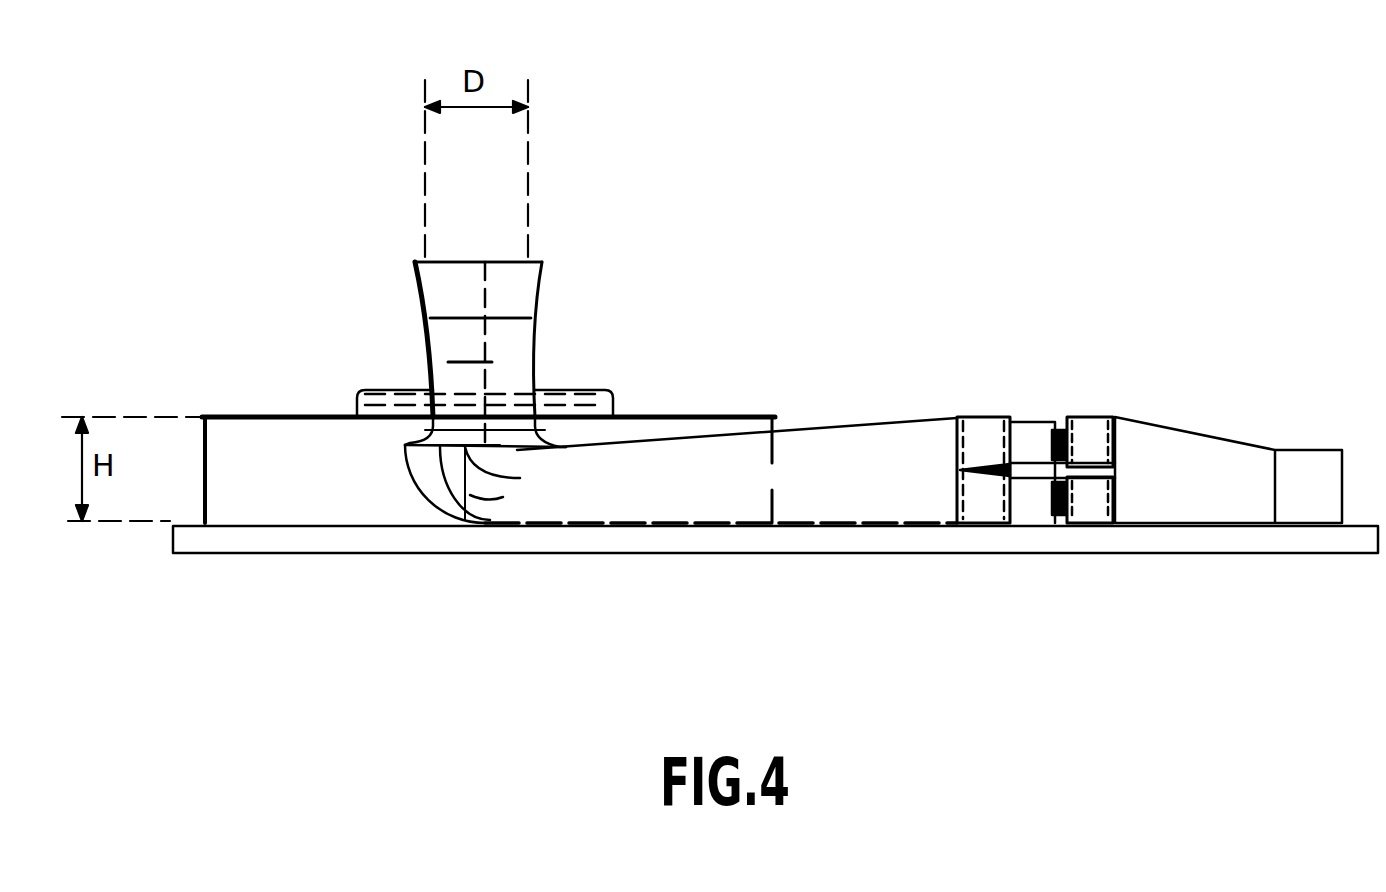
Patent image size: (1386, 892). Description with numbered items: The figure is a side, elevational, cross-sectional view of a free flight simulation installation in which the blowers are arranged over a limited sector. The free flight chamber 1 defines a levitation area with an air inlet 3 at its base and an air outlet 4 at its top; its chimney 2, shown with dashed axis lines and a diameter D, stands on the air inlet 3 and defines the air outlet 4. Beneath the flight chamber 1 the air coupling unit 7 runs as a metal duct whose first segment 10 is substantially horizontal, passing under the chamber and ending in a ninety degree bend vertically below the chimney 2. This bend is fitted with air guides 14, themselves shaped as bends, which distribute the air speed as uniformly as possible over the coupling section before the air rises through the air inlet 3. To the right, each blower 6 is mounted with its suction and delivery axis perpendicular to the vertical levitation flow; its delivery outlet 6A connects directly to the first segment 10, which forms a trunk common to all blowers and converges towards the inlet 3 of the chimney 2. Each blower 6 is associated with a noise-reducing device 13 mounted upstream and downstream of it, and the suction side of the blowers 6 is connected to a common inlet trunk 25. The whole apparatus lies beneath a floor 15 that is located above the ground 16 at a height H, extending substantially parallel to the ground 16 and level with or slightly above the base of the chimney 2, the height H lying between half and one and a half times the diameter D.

The free flight chamber 1 is at (420, 304).
The chimney 2 is at (515, 348).
The air inlet 3 is at (517, 448).
The air outlet 4 is at (530, 257).
The blower 6 is at (1037, 440).
The delivery outlet 6A is at (1002, 445).
The air coupling unit 7 is at (862, 424).
The first segment 10 is at (792, 502).
The noise-reducing device 13 is at (1092, 437).
The air guides 14 is at (488, 493).
The floor 15 is at (232, 415).
The ground 16 is at (203, 535).
The common inlet trunk 25 is at (1195, 462).